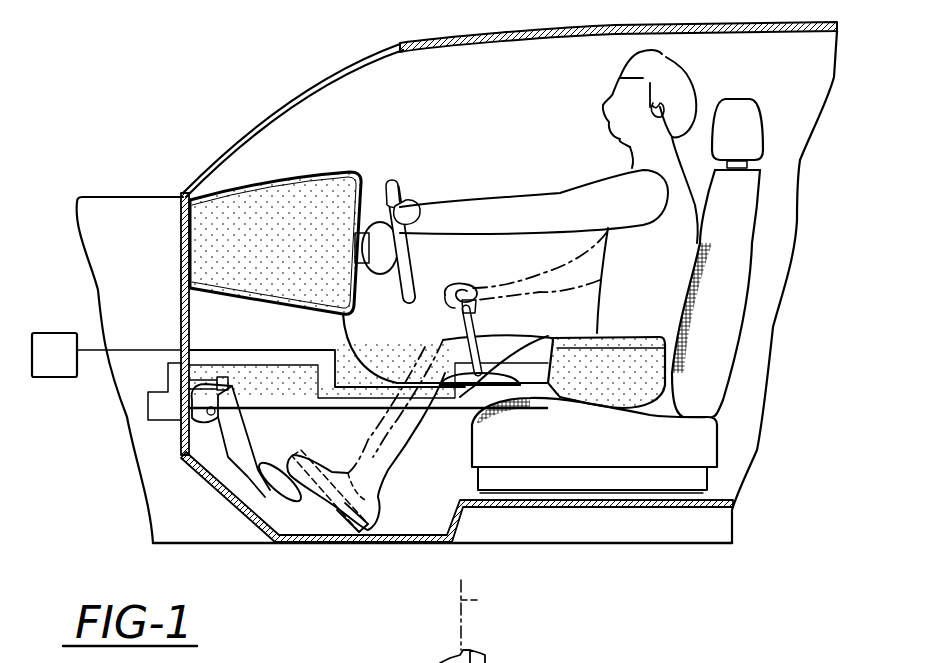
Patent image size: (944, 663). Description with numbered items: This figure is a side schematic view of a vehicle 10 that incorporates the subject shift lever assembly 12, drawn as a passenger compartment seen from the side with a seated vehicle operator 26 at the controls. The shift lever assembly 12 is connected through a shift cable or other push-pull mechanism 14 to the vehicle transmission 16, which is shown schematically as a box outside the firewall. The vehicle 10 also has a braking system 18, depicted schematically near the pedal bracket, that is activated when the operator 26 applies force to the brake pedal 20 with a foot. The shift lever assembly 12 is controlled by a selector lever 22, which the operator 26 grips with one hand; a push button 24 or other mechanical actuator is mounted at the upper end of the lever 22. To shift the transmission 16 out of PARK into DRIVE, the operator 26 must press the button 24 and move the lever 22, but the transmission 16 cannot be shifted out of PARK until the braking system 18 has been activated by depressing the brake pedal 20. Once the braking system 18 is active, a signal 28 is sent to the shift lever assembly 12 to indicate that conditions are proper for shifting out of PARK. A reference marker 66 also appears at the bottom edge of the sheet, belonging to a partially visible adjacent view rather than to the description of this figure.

The vehicle 10 is at (232, 69).
The shift lever assembly 12 is at (414, 327).
The shift cable or push-pull mechanism 14 is at (127, 350).
The vehicle transmission 16 is at (47, 335).
The braking system 18 is at (158, 408).
The brake pedal 20 is at (228, 448).
The selector lever 22 is at (475, 323).
The push button 24 is at (463, 293).
The vehicle operator 26 is at (654, 284).
The signal 28 is at (287, 365).
The center line 66 is at (488, 604).